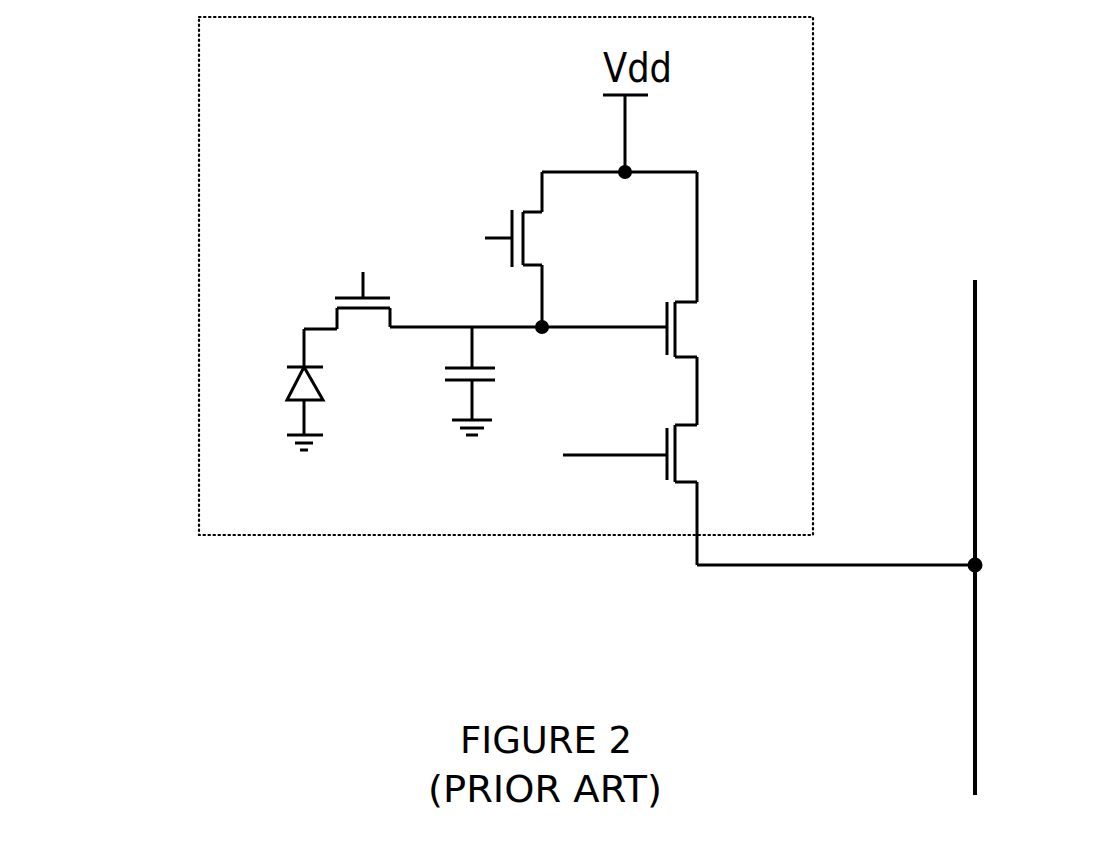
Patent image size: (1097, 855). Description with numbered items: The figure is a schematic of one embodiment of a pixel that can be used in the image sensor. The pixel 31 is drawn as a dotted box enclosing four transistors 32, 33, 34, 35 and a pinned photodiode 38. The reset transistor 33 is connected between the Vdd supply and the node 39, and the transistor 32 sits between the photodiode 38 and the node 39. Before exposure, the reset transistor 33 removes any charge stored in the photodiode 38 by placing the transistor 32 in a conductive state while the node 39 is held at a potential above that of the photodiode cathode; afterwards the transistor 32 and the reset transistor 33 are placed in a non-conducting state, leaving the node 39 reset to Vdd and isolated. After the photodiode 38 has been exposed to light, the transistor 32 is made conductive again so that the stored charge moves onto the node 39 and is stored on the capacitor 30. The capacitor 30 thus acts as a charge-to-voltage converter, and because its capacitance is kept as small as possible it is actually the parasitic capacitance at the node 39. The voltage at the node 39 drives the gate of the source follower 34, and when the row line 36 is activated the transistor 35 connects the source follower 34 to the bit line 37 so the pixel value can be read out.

The capacitor 30 is at (450, 380).
The pixel 31 is at (195, 88).
The transistor 32 is at (347, 297).
The reset transistor 33 is at (507, 250).
The source follower 34 is at (680, 298).
The transistor 35 is at (677, 427).
The row line 36 is at (573, 458).
The bit line 37 is at (977, 465).
The pinned photodiode 38 is at (310, 370).
The node 39 is at (578, 330).